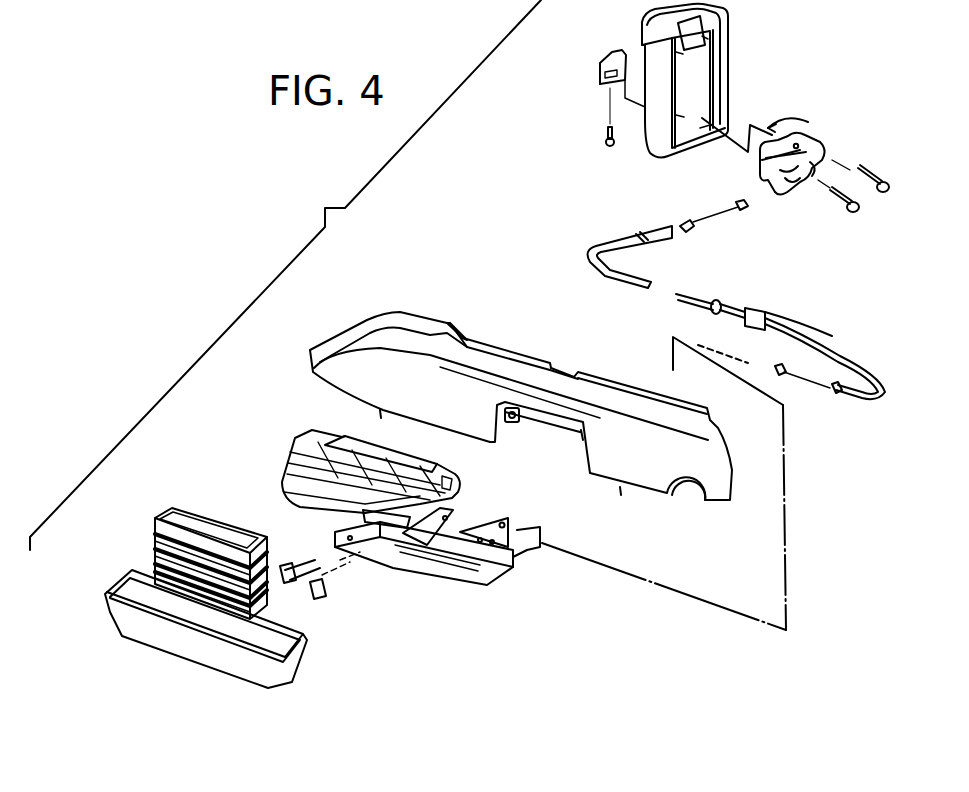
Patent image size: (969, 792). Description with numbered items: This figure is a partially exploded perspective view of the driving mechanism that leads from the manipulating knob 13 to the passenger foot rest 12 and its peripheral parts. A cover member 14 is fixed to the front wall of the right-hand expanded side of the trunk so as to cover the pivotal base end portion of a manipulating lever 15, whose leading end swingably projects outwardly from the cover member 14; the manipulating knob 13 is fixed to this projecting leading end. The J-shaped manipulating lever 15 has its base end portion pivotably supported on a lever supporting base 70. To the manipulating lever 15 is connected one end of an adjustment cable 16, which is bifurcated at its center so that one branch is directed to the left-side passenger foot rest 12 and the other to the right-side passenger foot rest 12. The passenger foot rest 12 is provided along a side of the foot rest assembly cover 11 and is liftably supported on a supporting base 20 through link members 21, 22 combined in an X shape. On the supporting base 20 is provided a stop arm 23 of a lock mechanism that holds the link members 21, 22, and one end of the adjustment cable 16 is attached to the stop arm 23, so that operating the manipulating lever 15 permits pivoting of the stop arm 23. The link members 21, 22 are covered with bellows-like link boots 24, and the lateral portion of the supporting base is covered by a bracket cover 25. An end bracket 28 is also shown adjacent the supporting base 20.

The foot rest assembly cover 11 is at (515, 345).
The passenger foot rest 12 is at (285, 453).
The manipulating knob 13 is at (600, 66).
The cover member 14 is at (730, 62).
The manipulating lever 15 is at (805, 148).
The adjustment cable 16 is at (590, 257).
The lever supporting base 70 is at (758, 172).
The supporting base 20 is at (415, 572).
The link member 21 is at (330, 526).
The link member 22 is at (455, 520).
The stop arm 23 is at (490, 515).
The link boots 24 is at (153, 530).
The bracket cover 25 is at (295, 668).
The end bracket 28 is at (535, 560).